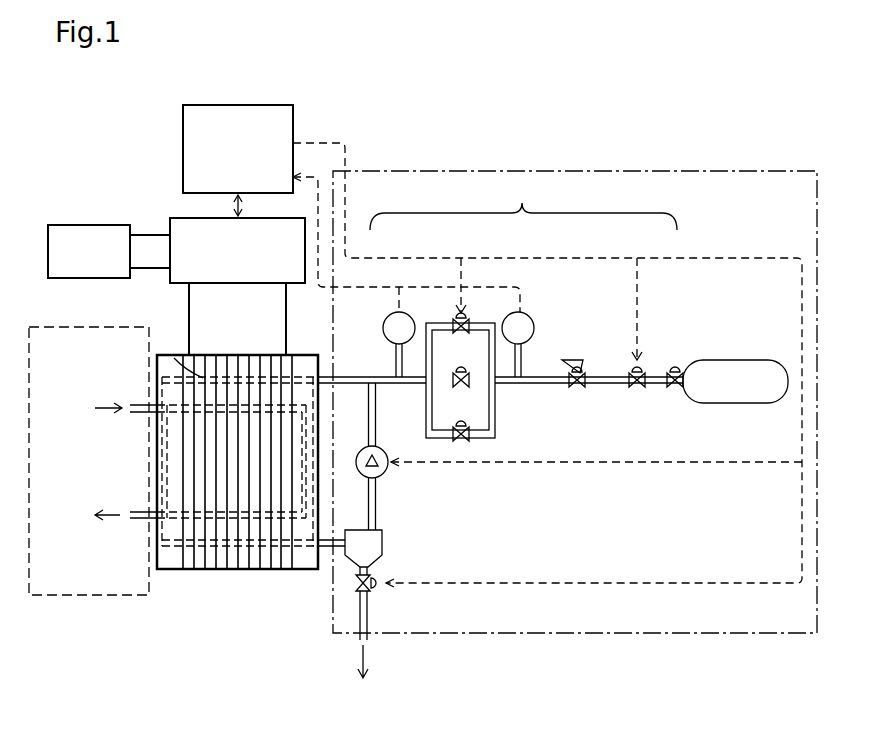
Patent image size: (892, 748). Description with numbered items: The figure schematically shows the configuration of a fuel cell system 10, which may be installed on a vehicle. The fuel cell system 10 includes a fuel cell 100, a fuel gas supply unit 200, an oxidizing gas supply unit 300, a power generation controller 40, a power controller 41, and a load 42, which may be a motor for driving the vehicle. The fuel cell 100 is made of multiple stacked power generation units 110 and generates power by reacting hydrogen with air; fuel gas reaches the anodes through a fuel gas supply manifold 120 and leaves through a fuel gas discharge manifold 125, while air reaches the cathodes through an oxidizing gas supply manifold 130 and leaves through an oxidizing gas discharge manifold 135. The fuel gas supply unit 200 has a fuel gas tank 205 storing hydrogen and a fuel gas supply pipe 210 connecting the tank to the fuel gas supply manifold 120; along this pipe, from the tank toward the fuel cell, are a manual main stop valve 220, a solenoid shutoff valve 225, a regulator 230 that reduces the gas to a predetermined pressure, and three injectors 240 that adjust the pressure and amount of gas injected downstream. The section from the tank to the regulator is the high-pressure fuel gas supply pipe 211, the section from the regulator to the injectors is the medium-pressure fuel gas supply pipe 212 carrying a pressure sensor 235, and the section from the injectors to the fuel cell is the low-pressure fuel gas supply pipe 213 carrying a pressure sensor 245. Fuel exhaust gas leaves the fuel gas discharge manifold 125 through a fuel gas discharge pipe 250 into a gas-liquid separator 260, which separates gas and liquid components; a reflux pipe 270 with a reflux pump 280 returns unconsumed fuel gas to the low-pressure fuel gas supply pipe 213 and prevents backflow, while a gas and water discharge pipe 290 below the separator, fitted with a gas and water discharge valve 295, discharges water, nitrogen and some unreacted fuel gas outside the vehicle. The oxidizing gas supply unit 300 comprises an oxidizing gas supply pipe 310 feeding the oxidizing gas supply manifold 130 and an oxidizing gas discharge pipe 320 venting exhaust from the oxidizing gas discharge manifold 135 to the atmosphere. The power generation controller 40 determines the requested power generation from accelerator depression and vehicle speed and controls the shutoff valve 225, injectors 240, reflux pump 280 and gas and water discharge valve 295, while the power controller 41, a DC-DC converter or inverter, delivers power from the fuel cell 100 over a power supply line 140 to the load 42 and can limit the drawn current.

The fuel cell system 10 is at (444, 150).
The power generation controller 40 is at (204, 105).
The power controller 41 is at (193, 218).
The load 42 is at (73, 225).
The fuel cell 100 is at (303, 355).
The power generation unit 110 is at (200, 355).
The fuel gas supply manifold 120 is at (174, 355).
The fuel gas discharge manifold 125 is at (184, 546).
The oxidizing gas supply manifold 130 is at (258, 405).
The oxidizing gas discharge manifold 135 is at (232, 518).
The power supply line 140 is at (286, 305).
The fuel gas supply unit 200 is at (730, 171).
The fuel gas tank 205 is at (741, 360).
The fuel gas supply pipe 210 is at (523, 203).
The high-pressure fuel gas supply pipe 211 is at (613, 377).
The medium-pressure fuel gas supply pipe 212 is at (550, 377).
The low-pressure fuel gas supply pipe 213 is at (363, 377).
The main stop valve 220 is at (678, 358).
The shutoff valve 225 is at (640, 388).
The regulator 230 is at (581, 388).
The pressure sensor 235 is at (520, 286).
The injector 240 is at (467, 331).
The pressure sensor 245 is at (404, 295).
The fuel gas discharge pipe 250 is at (325, 546).
The gas-liquid separator 260 is at (383, 545).
The reflux pipe 270 is at (377, 508).
The reflux pump 280 is at (387, 471).
The gas and water discharge pipe 290 is at (368, 620).
The gas and water discharge valve 295 is at (374, 577).
The oxidizing gas supply unit 300 is at (107, 327).
The oxidizing gas supply pipe 310 is at (137, 405).
The oxidizing gas discharge pipe 320 is at (140, 512).